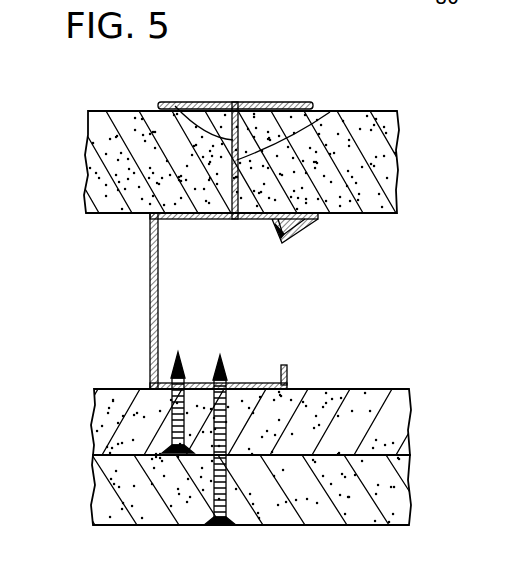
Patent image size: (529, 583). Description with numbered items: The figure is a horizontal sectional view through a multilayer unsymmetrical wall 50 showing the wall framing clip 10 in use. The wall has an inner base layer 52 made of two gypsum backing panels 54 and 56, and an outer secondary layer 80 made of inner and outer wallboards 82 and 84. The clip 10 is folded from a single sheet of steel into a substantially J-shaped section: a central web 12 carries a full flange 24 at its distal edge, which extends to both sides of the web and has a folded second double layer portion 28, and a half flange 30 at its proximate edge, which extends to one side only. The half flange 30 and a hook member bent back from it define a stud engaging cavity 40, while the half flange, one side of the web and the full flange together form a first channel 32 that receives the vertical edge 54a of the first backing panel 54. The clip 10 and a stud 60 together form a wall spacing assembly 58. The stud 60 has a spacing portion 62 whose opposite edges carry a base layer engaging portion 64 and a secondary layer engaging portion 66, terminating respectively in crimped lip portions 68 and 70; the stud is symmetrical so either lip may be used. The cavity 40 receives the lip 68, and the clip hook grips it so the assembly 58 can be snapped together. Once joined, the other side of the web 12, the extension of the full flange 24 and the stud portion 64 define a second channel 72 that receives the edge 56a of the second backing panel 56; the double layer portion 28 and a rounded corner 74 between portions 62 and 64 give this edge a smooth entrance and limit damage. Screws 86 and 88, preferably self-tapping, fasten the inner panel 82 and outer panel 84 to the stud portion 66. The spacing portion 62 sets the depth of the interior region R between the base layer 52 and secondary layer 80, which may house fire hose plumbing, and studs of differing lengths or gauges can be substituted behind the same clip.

The wall framing clip 10 is at (143, 88).
The web 12 is at (521, 263).
The full flange 24 is at (253, 160).
The second double layer portion 28 is at (157, 107).
The half flange 30 is at (277, 213).
The first channel 32 is at (278, 101).
The stud engaging cavity 40 is at (300, 222).
The multilayer wall assembly 50 is at (460, 160).
The inner base layer 52 is at (378, 214).
The first backing panel 54 is at (377, 120).
The vertical edge of first backing panel 54a is at (263, 138).
The second backing panel 56 is at (98, 160).
The edge of second backing panel 56a is at (232, 203).
The wall spacing assembly 58 is at (188, 301).
The stud 60 is at (122, 333).
The spacing portion 62 is at (160, 277).
The base layer engaging portion 64 is at (199, 220).
The secondary layer engaging portion 66 is at (201, 442).
The crimped lip portion 68 is at (272, 228).
The crimped lip portion 70 is at (277, 365).
The second channel 72 is at (170, 105).
The rounded corner 74 is at (152, 222).
The outer secondary layer 80 is at (271, 424).
The inner wall panel 82 is at (400, 423).
The outer wall panel 84 is at (400, 487).
The screw 86 is at (177, 442).
The screw 88 is at (212, 518).
The interior region R is at (347, 303).